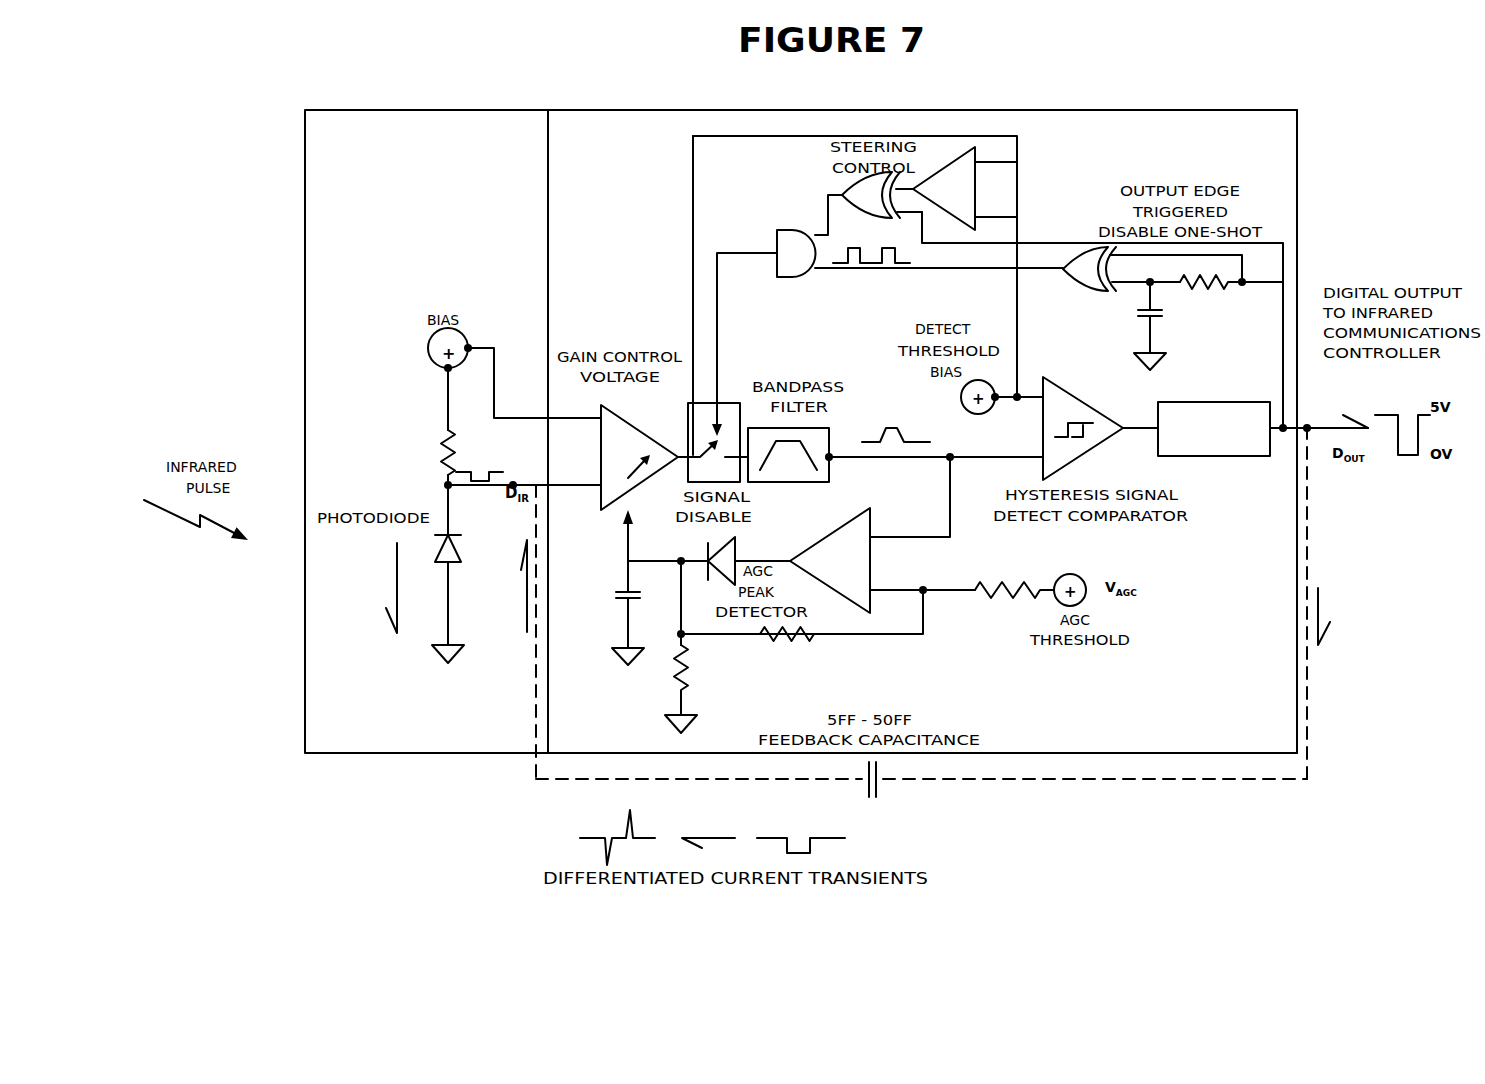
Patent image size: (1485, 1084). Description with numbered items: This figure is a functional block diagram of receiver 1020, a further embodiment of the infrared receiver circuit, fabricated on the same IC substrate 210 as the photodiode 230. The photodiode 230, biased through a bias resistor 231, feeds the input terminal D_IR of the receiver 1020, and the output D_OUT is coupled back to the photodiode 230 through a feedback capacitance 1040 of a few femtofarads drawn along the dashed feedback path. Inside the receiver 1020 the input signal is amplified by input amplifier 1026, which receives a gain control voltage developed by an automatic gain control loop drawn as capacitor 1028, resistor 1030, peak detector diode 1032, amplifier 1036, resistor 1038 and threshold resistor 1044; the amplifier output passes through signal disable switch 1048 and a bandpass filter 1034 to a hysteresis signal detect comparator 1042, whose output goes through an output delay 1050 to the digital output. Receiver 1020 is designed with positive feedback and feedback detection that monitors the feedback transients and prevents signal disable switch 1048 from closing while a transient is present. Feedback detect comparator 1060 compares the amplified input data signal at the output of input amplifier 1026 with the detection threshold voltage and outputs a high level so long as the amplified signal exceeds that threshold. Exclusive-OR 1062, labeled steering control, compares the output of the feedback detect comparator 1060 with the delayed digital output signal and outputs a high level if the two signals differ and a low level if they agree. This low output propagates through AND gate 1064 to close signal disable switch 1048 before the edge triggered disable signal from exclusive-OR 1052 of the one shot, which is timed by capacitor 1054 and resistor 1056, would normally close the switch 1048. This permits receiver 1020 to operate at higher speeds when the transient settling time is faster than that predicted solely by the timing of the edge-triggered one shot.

The IC substrate 210 is at (410, 110).
The receiver 1020 is at (1185, 156).
The bias resistor 231 is at (457, 430).
The photodiode 230 is at (455, 565).
The input amplifier 1026 is at (658, 437).
The capacitor 1028 is at (618, 588).
The resistor 1030 is at (690, 672).
The AGC peak detector diode 1032 is at (742, 545).
The bandpass filter 1034 is at (823, 428).
The AGC amplifier 1036 is at (870, 523).
The feedback resistor 1038 is at (785, 637).
The feedback capacitance 1040 is at (877, 793).
The hysteresis signal detect comparator 1042 is at (1112, 437).
The AGC threshold resistor 1044 is at (988, 603).
The signal disable switch 1048 is at (720, 405).
The output delay 1050 is at (1188, 402).
The exclusive-OR 1052 is at (1055, 279).
The one-shot capacitor 1054 is at (1140, 316).
The one-shot resistor 1056 is at (1197, 285).
The feedback detect comparator 1060 is at (977, 197).
The exclusive-OR 1062 is at (835, 189).
The AND gate 1064 is at (790, 277).